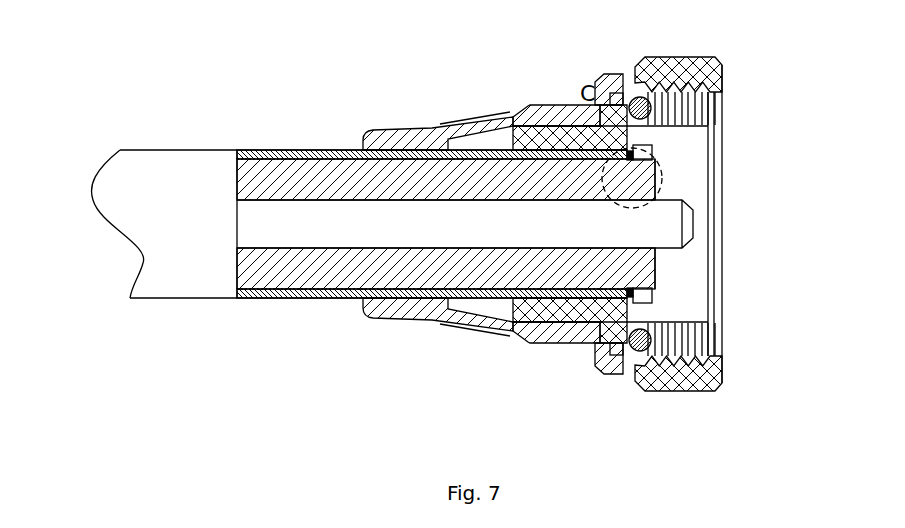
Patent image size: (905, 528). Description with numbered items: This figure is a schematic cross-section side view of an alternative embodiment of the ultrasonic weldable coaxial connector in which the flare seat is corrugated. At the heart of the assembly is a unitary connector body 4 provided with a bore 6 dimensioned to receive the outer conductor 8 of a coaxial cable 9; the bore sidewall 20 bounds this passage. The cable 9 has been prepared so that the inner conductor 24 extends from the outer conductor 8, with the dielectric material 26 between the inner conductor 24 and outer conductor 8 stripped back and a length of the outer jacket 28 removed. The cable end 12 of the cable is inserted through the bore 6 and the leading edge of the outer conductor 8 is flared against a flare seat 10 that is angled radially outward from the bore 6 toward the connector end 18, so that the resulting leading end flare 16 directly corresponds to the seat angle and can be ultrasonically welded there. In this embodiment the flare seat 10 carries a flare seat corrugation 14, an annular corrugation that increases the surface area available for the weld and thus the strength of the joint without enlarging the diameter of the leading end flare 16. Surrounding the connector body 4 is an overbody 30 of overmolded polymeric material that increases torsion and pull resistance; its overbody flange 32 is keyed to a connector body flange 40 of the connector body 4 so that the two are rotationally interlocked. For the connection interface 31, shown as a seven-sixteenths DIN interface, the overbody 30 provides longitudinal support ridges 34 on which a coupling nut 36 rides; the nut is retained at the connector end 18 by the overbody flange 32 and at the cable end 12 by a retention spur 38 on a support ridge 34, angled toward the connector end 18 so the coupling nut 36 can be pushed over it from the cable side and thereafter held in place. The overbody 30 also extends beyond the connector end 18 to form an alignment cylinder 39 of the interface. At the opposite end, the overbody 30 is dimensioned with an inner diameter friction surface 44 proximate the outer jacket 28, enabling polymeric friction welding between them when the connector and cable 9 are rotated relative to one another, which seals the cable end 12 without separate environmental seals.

The connector body 4 is at (477, 140).
The bore 6 is at (655, 292).
The outer conductor 8 is at (318, 163).
The cable 9 is at (108, 162).
The flare seat 10 is at (655, 140).
The cable end 12 is at (92, 221).
The flare seat corrugation 14 is at (650, 120).
The leading end flare 16 is at (658, 300).
The connector end 18 is at (735, 222).
The bore sidewall 20 is at (520, 294).
The inner conductor 24 is at (275, 228).
The dielectric material 26 is at (362, 172).
The outer jacket 28 is at (262, 156).
The overbody 30 is at (398, 133).
The connection interface 31 is at (690, 343).
The overbody flange 32 is at (612, 80).
The support ridge 34 is at (555, 103).
The coupling nut 36 is at (703, 67).
The retention spur 38 is at (530, 103).
The alignment cylinder 39 is at (690, 178).
The connector body flange 40 is at (603, 360).
The friction surface 44 is at (405, 298).